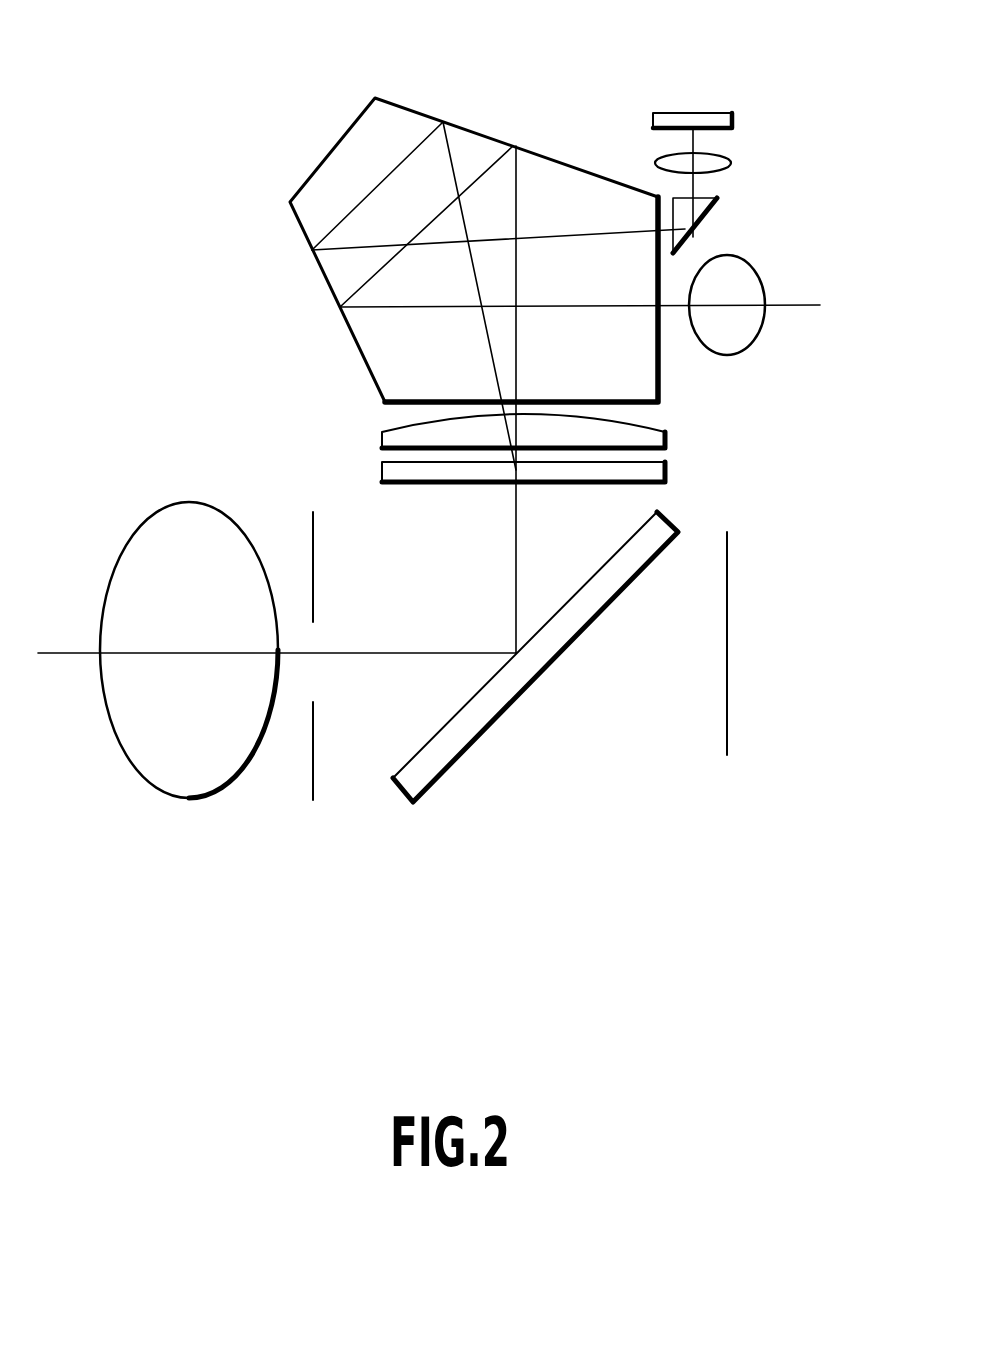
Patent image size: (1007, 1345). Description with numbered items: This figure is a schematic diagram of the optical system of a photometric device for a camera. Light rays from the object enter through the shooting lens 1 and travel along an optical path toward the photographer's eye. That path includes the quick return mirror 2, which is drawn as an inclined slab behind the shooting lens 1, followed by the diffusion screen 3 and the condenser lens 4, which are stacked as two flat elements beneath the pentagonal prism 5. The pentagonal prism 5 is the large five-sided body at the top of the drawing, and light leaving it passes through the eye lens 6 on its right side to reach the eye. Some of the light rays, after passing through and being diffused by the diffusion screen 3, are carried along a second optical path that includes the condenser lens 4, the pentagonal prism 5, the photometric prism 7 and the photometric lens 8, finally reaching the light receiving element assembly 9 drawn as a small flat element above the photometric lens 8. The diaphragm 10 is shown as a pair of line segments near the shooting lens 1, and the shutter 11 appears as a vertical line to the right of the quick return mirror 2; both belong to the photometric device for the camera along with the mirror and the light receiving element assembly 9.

The shooting lens 1 is at (190, 800).
The quick return mirror 2 is at (523, 693).
The diffusion screen 3 is at (382, 470).
The condenser lens 4 is at (665, 432).
The pentagonal prism 5 is at (490, 137).
The eye lens 6 is at (762, 328).
The photometric prism 7 is at (717, 198).
The photometric lens 8 is at (731, 163).
The light receiving element assembly 9 is at (732, 115).
The diaphragm 10 is at (313, 785).
The shutter 11 is at (727, 700).